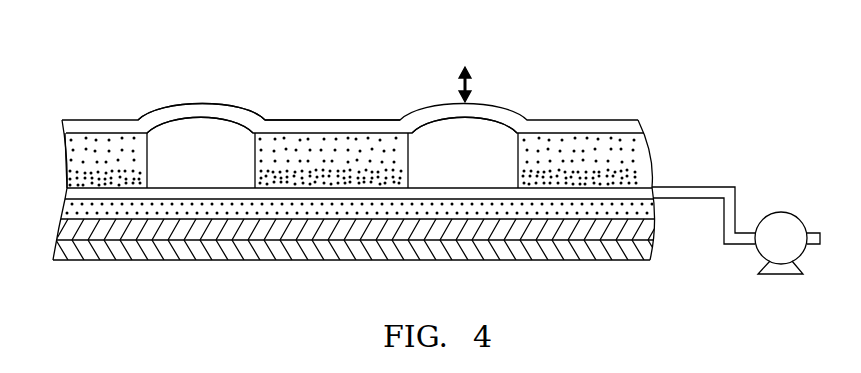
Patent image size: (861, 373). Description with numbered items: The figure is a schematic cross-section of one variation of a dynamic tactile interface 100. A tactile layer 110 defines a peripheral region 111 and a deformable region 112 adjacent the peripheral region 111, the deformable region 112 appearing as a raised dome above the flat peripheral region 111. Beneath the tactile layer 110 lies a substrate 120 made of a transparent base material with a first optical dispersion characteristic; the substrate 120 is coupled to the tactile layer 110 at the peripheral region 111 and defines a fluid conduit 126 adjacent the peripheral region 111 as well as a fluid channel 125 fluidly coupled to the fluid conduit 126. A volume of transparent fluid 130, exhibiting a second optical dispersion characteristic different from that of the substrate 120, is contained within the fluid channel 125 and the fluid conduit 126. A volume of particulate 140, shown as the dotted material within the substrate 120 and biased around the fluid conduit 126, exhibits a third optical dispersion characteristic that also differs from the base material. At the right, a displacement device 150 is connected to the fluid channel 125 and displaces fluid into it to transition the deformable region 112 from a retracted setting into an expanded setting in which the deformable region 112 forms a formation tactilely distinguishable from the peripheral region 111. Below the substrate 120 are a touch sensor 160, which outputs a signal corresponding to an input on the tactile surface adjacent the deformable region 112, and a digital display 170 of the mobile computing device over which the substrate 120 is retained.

The dynamic tactile interface 100 is at (677, 76).
The tactile layer 110 is at (637, 127).
The peripheral region 111 is at (334, 117).
The deformable region 112 is at (207, 100).
The substrate 120 is at (623, 157).
The fluid channel 125 is at (72, 192).
The fluid conduit 126 is at (198, 157).
The volume of transparent fluid 130 is at (482, 151).
The volume of particulate 140 is at (549, 201).
The displacement device 150 is at (780, 228).
The touch sensor 160 is at (72, 228).
The digital display 170 is at (193, 246).